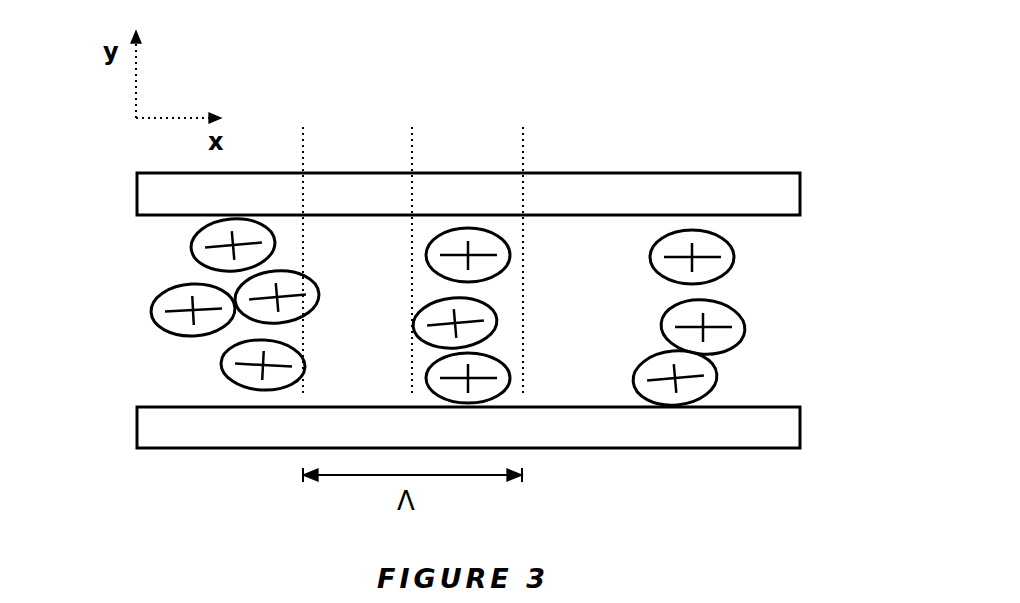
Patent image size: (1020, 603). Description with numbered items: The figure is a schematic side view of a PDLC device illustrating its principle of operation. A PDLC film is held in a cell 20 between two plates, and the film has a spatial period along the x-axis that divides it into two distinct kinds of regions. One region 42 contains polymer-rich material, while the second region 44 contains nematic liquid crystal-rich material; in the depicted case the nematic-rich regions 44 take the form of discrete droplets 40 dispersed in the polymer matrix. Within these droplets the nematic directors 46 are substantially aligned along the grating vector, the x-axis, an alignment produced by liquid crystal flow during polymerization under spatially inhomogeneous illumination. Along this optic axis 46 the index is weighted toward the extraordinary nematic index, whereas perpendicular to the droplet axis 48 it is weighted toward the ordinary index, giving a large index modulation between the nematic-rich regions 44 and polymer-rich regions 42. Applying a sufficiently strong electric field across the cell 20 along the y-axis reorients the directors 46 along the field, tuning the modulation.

The cell 20 is at (118, 173).
The droplets 40 is at (730, 270).
The polymer-rich region 42 is at (412, 127).
The nematic liquid crystal-rich region 44 is at (523, 127).
The nematic director 46 is at (717, 328).
The droplet axis 48 is at (703, 338).